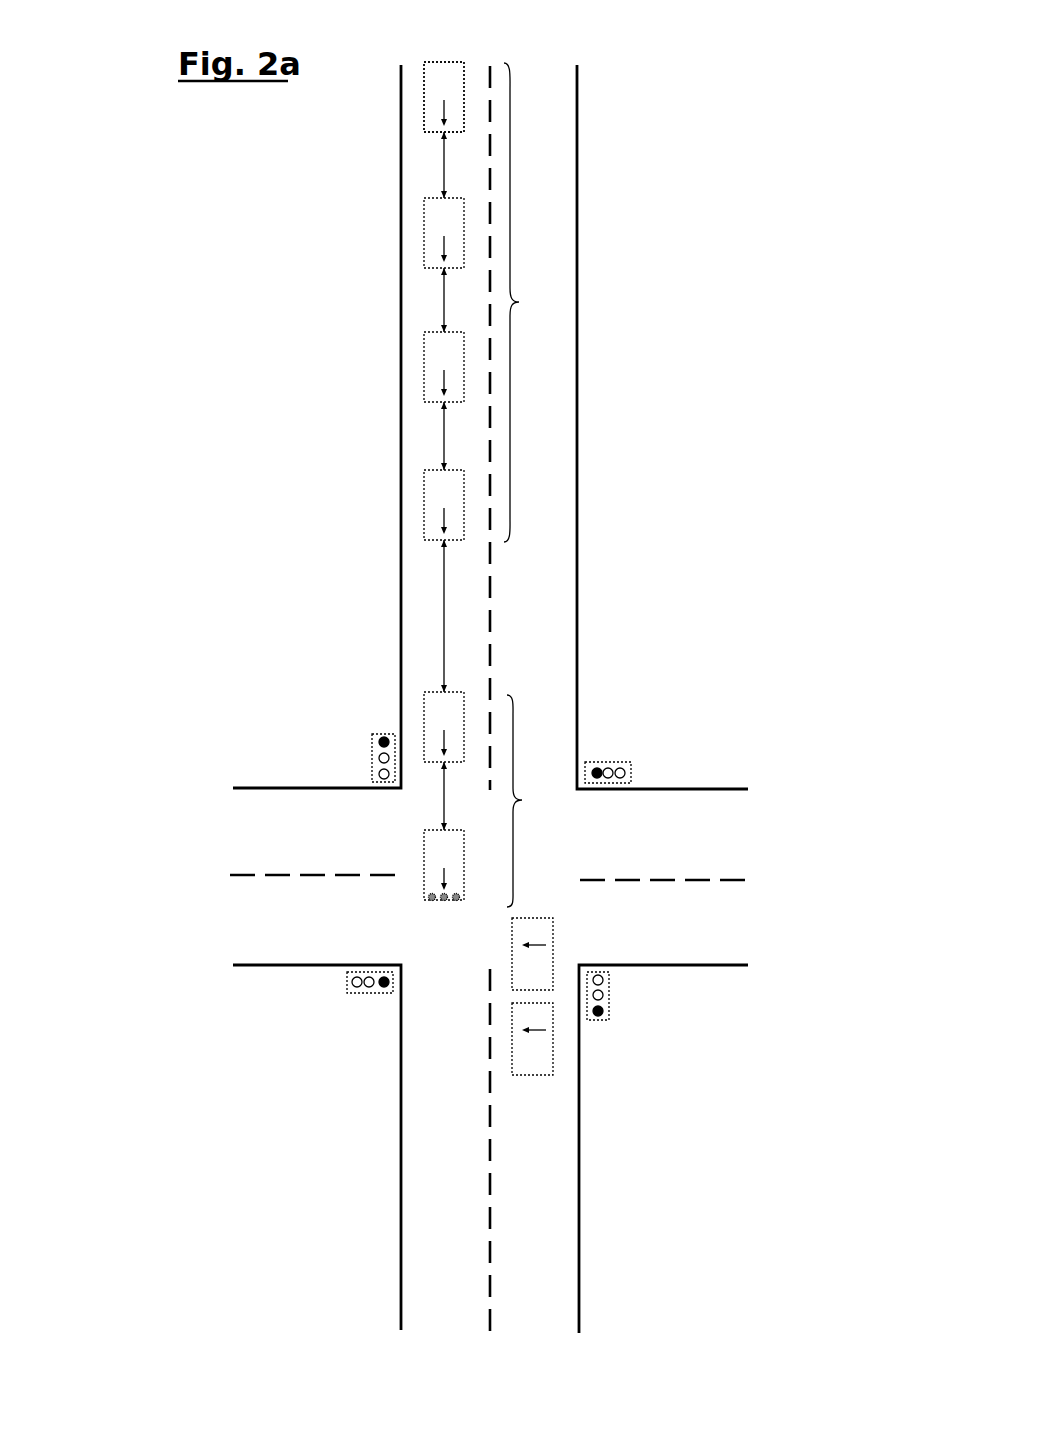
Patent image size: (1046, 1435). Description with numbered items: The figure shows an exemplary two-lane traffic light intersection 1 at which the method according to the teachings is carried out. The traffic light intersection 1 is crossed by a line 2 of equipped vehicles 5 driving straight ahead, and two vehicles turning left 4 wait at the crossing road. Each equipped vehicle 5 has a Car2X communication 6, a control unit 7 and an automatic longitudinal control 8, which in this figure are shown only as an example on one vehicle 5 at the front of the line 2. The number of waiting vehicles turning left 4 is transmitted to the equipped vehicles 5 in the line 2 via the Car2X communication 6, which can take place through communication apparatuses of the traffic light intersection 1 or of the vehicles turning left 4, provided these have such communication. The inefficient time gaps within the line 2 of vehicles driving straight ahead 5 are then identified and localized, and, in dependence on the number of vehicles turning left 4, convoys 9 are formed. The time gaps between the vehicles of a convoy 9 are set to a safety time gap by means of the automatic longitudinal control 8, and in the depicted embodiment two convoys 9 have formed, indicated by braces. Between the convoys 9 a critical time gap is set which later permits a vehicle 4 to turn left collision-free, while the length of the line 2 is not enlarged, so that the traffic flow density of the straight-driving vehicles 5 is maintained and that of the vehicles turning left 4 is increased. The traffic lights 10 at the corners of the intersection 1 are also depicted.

The traffic light intersection 1 is at (626, 696).
The line 2 is at (444, 97).
The vehicles turning left 4 is at (532, 996).
The equipped vehicles 5 is at (445, 52).
The Car2X communication 6 is at (428, 899).
The control unit 7 is at (444, 906).
The automatic longitudinal control 8 is at (459, 900).
The convoys 9 is at (529, 485).
The traffic lights 10 is at (504, 898).